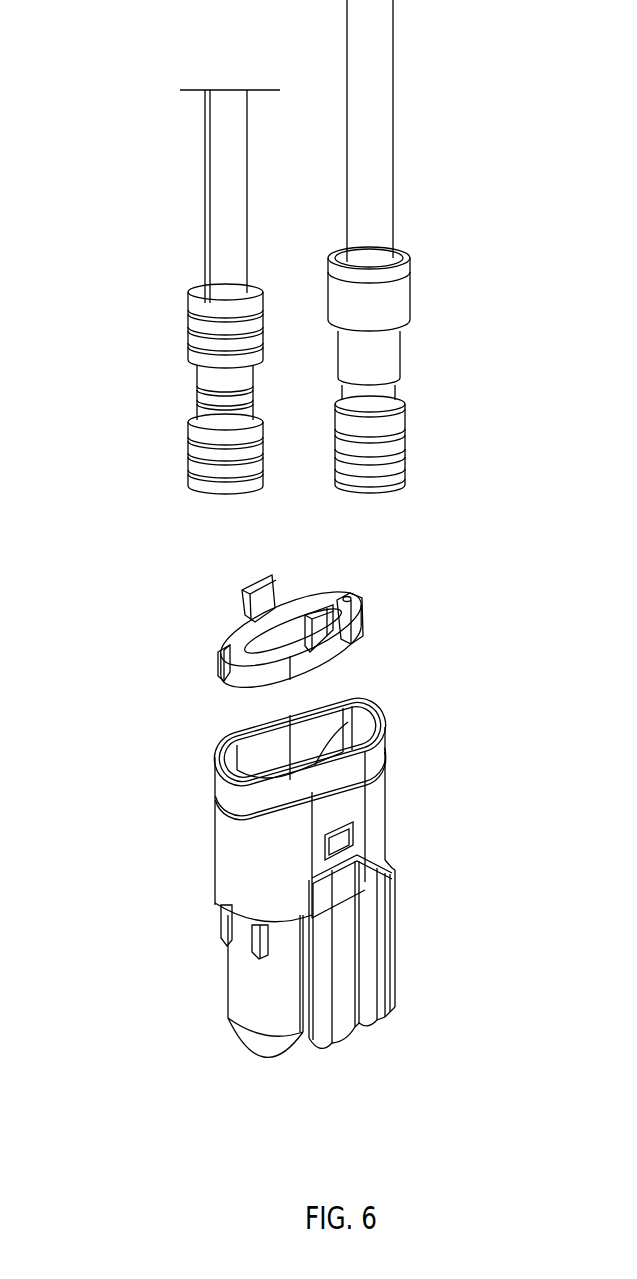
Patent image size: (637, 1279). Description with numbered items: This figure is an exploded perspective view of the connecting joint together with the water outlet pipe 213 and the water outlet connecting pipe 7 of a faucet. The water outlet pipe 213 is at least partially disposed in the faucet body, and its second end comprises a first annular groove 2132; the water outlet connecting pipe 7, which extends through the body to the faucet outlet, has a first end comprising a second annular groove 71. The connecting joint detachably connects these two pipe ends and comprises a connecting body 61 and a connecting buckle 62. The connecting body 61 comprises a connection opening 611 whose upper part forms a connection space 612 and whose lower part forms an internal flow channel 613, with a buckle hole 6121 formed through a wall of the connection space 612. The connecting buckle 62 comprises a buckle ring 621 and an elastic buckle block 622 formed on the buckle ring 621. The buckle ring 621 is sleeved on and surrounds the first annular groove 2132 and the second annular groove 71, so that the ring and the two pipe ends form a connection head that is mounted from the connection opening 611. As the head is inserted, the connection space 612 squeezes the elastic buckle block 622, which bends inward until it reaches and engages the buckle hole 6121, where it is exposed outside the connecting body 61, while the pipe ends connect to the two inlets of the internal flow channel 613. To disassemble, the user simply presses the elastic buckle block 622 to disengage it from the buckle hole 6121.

The water outlet connecting pipe 7 is at (225, 213).
The second annular groove 71 is at (217, 415).
The water outlet pipe 213 is at (372, 113).
The first annular groove 2132 is at (380, 393).
The connecting buckle 62 is at (261, 620).
The buckle ring 621 is at (355, 635).
The elastic buckle block 622 is at (245, 598).
The connecting body 61 is at (286, 876).
The connection opening 611 is at (255, 753).
The connection space 612 is at (385, 703).
The buckle hole 6121 is at (388, 852).
The internal flow channel 613 is at (265, 1018).